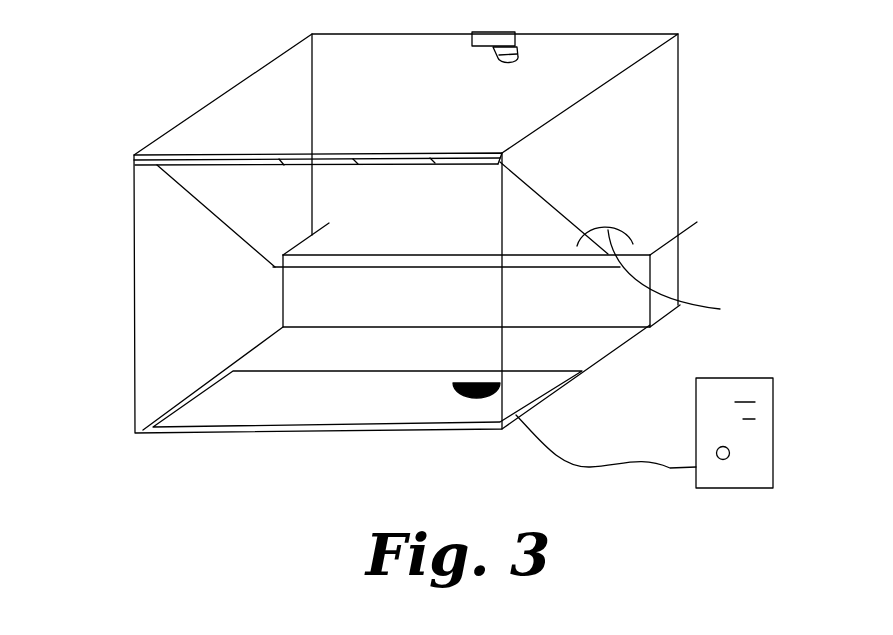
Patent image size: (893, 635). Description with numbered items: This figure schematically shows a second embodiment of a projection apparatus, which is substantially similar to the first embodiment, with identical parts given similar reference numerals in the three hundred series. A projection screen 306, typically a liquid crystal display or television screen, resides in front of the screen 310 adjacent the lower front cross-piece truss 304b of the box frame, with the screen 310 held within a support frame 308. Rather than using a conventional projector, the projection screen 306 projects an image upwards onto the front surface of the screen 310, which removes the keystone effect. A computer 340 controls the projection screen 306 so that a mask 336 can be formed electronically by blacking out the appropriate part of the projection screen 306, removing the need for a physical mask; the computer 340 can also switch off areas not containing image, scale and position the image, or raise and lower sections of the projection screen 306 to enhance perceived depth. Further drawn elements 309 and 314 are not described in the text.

The lower front cross-piece truss 304b is at (192, 433).
The projection screen 306 is at (220, 403).
The support frame 308 is at (488, 150).
The shelf 309 is at (310, 252).
The screen 310 is at (525, 220).
The top panel 314 is at (200, 165).
The mask 336 is at (478, 398).
The computer 340 is at (728, 465).